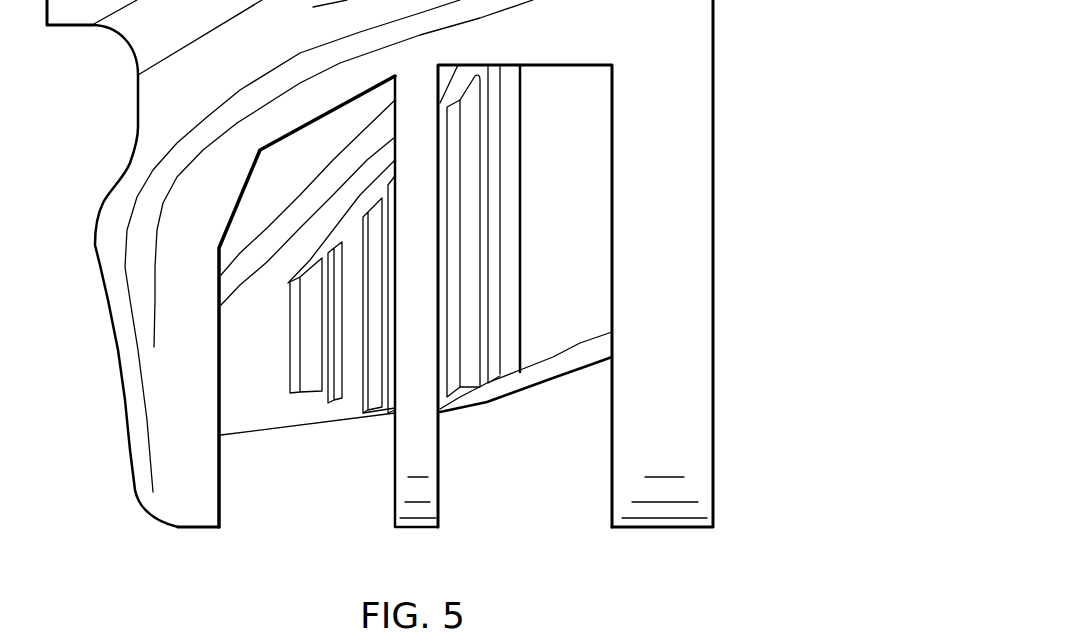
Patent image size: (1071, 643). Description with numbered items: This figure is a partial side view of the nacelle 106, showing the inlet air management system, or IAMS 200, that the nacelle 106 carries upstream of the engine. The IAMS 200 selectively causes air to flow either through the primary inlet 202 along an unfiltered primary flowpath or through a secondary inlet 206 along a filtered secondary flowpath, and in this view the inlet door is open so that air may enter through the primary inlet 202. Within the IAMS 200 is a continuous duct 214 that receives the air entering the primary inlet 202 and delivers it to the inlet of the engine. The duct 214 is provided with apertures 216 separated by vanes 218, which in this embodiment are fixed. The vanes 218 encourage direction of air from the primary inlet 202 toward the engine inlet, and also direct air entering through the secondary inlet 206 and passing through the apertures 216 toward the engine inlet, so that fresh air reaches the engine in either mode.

The nacelle 106 is at (742, 70).
The inlet air management system (IAMS) 200 is at (100, 445).
The primary inlet 202 is at (116, 352).
The secondary inlet 206 is at (397, 510).
The continuous duct 214 is at (248, 426).
The apertures 216 is at (310, 352).
The vanes 218 is at (334, 377).